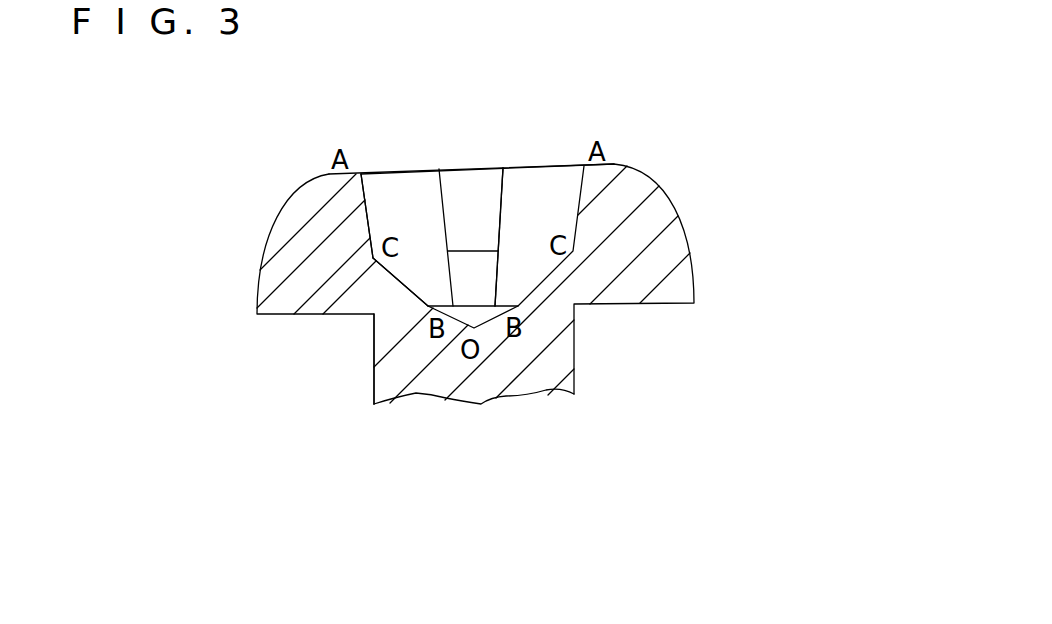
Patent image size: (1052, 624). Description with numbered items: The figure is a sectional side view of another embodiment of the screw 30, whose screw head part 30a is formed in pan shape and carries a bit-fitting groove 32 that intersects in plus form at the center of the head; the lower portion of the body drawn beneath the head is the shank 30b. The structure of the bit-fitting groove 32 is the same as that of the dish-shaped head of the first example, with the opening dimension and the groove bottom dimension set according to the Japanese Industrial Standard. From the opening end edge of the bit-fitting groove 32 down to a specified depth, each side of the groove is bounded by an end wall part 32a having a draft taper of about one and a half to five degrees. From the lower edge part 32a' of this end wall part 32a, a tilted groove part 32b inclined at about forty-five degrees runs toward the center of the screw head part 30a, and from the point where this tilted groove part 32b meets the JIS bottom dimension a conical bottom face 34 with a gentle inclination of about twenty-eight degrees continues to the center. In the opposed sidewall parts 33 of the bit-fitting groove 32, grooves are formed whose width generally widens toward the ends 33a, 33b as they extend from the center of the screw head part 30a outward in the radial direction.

The screw 30 is at (641, 171).
The screw head part 30a is at (645, 228).
The shank 30b is at (538, 338).
The bit-fitting groove 32 is at (541, 166).
The end wall part 32a is at (343, 174).
The lower edge part 32a' is at (322, 315).
The tilted groove part 32b is at (373, 337).
The opposed sidewall parts 33 is at (385, 192).
The groove end 33a is at (500, 183).
The groove end 33b is at (443, 183).
The conical bottom face 34 is at (477, 313).